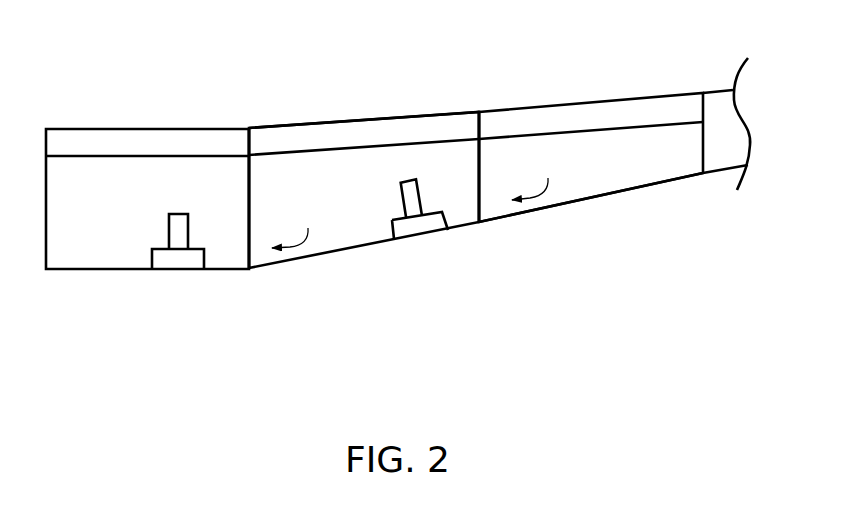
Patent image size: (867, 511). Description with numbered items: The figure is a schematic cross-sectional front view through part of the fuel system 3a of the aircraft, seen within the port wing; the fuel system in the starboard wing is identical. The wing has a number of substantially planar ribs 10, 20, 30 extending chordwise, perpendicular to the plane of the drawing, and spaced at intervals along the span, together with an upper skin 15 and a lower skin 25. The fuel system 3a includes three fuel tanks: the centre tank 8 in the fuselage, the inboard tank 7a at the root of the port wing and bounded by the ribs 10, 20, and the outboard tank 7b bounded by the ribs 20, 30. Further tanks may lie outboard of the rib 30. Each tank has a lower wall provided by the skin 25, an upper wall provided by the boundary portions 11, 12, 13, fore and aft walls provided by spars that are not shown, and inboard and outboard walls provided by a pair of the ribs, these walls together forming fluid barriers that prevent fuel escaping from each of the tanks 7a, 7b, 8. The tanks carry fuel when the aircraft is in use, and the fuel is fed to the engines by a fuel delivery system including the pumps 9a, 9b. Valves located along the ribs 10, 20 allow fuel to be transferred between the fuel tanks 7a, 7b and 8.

The fuel system 3a is at (549, 322).
The inboard tank 7a is at (335, 188).
The outboard tank 7b is at (600, 163).
The centre tank 8 is at (78, 190).
The pump 9a is at (172, 274).
The pump 9b is at (415, 246).
The rib 10 is at (253, 148).
The boundary portion 11 is at (140, 155).
The boundary portion 12 is at (317, 148).
The boundary portion 13 is at (573, 132).
The upper skin 15 is at (410, 117).
The rib 20 is at (482, 123).
The lower skin 25 is at (625, 193).
The rib 30 is at (708, 107).